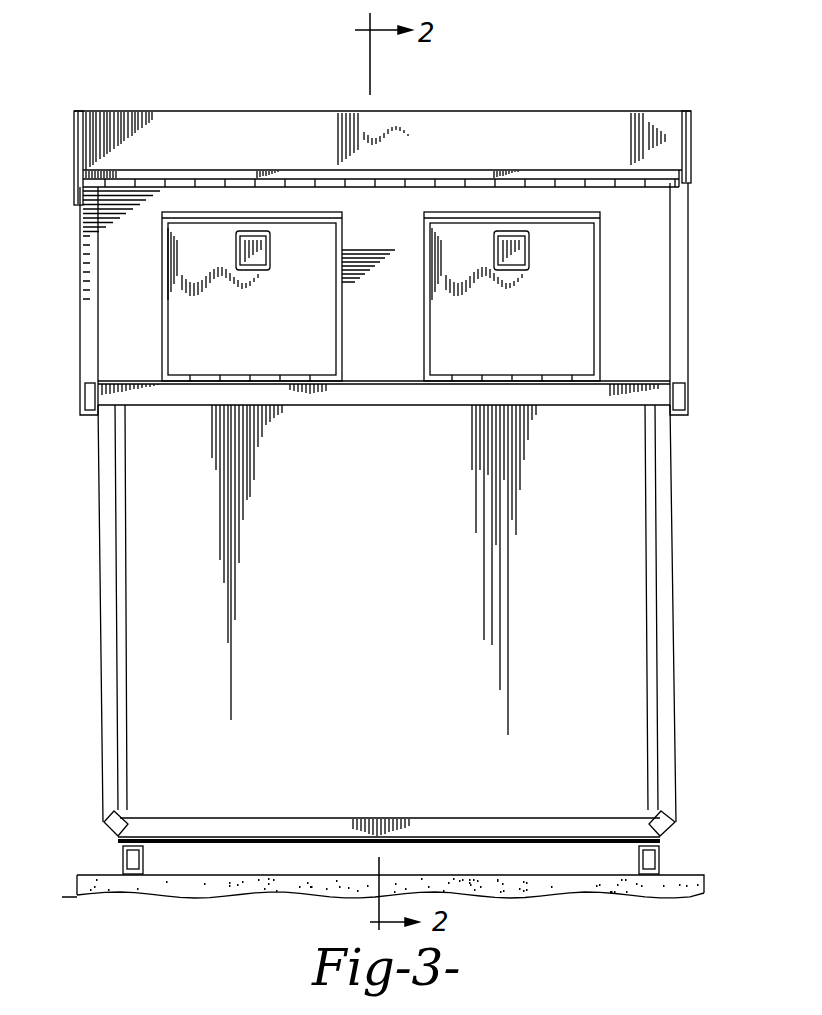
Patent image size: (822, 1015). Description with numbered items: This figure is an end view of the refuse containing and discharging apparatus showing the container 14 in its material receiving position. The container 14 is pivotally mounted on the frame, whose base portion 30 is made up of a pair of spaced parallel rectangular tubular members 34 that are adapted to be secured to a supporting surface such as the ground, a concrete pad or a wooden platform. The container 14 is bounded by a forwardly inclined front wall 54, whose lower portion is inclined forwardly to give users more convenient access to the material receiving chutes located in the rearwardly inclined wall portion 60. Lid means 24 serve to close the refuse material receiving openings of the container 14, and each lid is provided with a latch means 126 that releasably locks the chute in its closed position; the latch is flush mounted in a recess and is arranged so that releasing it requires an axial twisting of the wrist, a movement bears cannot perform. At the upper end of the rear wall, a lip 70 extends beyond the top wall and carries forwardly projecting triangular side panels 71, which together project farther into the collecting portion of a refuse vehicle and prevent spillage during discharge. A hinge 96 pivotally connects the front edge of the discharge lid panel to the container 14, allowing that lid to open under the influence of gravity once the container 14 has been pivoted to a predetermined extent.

The container 14 is at (694, 200).
The lid means 24 is at (475, 310).
The base portion 30 is at (148, 862).
The rectangular tubular members 34 is at (122, 858).
The front wall 54 is at (607, 716).
The rearwardly inclined wall portion 60 is at (127, 219).
The lip 70 is at (318, 118).
The triangular side panels 71 is at (74, 126).
The hinge 96 is at (618, 175).
The latch means 126 is at (247, 238).